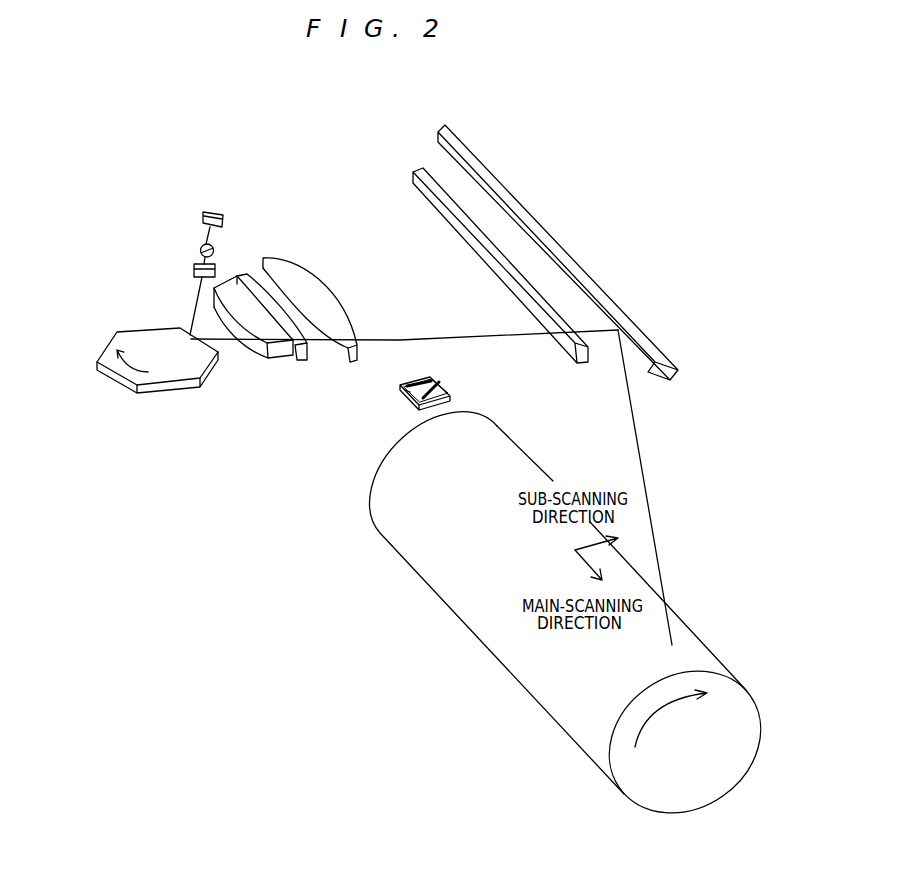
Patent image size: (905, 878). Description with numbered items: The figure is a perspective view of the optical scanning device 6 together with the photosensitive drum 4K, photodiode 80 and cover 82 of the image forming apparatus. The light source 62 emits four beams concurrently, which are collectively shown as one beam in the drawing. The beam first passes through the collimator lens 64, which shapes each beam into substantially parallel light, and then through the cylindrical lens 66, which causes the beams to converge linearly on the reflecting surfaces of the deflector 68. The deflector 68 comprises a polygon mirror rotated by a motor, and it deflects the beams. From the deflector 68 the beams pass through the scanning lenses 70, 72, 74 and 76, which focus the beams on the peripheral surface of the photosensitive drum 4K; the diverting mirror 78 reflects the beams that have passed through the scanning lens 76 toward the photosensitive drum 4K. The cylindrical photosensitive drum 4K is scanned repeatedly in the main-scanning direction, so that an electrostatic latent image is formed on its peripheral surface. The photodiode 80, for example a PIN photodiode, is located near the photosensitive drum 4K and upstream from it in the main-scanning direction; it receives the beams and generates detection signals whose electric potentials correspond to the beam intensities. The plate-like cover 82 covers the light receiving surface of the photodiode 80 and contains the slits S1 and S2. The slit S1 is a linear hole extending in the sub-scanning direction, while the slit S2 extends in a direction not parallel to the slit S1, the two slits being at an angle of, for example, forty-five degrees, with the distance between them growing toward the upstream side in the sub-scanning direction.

The optical scanning device 6 is at (301, 212).
The light source 62 is at (204, 215).
The collimator lens 64 is at (201, 250).
The cylindrical lens 66 is at (194, 272).
The deflector 68 is at (163, 373).
The scanning lens 70 is at (278, 356).
The scanning lens 72 is at (307, 358).
The scanning lens 74 is at (357, 358).
The scanning lens 76 is at (495, 267).
The diverting mirror 78 is at (528, 220).
The photodiode 80 is at (446, 387).
The cover 82 is at (438, 383).
The slit S1 is at (416, 379).
The slit S2 is at (443, 388).
The photosensitive drum 4K is at (493, 632).